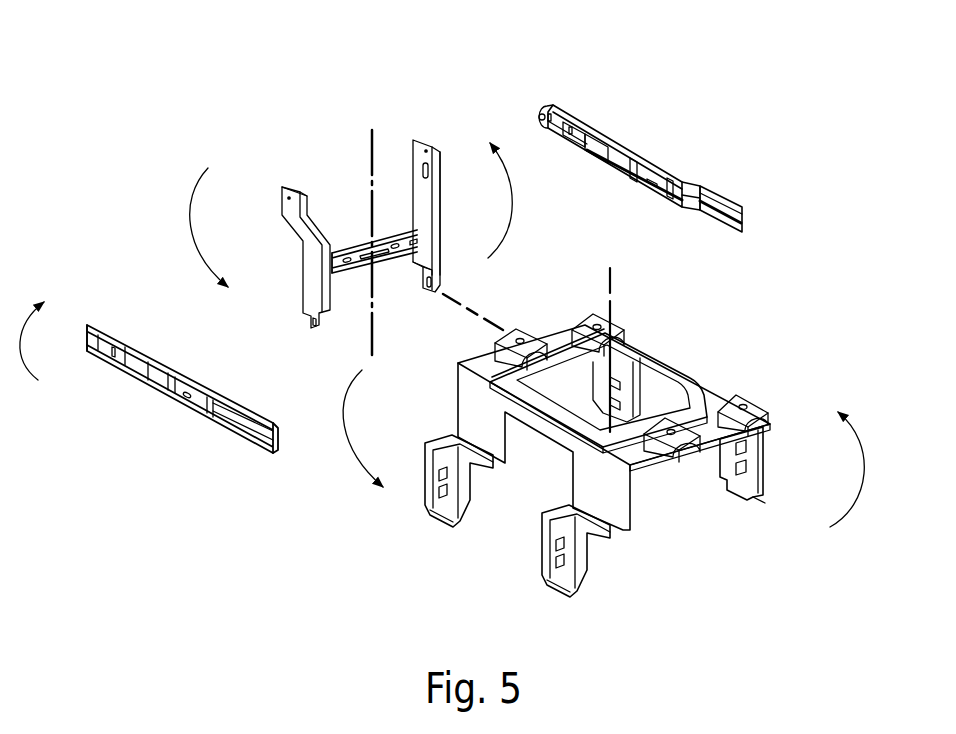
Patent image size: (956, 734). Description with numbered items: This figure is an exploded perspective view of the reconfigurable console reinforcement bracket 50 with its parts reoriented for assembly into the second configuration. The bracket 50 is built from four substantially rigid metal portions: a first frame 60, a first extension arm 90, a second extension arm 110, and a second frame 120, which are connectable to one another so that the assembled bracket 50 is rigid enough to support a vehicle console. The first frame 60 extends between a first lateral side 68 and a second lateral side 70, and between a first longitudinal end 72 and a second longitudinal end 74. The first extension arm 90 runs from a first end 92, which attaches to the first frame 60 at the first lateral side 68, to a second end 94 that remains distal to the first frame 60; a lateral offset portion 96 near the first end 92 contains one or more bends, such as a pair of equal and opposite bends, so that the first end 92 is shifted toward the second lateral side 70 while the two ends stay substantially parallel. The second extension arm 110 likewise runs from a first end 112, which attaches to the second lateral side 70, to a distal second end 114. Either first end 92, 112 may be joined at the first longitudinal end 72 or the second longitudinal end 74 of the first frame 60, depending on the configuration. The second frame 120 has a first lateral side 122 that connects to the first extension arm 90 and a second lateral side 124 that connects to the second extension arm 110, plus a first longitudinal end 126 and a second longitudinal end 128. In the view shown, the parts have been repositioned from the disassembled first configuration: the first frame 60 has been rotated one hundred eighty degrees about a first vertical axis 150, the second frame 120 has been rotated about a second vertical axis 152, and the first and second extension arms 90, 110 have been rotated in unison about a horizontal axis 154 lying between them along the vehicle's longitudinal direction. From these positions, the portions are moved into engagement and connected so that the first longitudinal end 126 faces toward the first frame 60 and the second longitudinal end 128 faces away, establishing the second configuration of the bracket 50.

The reconfigurable console reinforcement bracket 50 is at (168, 155).
The first frame 60 is at (805, 386).
The first lateral side 68 is at (767, 480).
The second lateral side 70 is at (457, 380).
The first longitudinal end 72 is at (660, 462).
The second longitudinal end 74 is at (552, 340).
The first extension arm 90 is at (652, 164).
The first end 92 is at (745, 213).
The second end 94 is at (540, 106).
The lateral offset portion 96 is at (684, 215).
The second extension arm 110 is at (135, 380).
The first end 112 is at (275, 457).
The second end 114 is at (87, 325).
The second frame 120 is at (445, 139).
The first lateral side 122 is at (441, 233).
The second lateral side 124 is at (301, 268).
The first longitudinal end 126 is at (441, 270).
The second longitudinal end 128 is at (281, 200).
The first vertical axis 150 is at (612, 290).
The second vertical axis 152 is at (368, 147).
The horizontal axis 154 is at (462, 300).